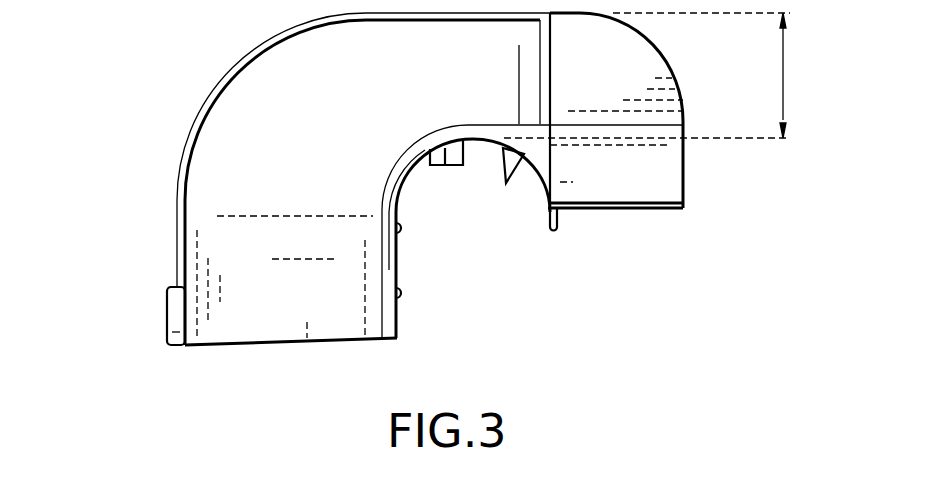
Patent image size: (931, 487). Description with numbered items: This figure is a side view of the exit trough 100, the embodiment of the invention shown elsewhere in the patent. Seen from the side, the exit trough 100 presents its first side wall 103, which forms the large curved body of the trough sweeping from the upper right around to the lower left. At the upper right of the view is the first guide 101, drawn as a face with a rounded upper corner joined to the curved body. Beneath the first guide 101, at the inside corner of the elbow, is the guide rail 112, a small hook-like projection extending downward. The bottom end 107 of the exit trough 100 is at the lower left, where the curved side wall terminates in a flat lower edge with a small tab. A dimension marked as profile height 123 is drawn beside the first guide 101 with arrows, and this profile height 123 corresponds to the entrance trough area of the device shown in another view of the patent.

The exit trough 100 is at (186, 50).
The first guide 101 is at (616, 173).
The first side wall 103 is at (344, 124).
The bottom end 107 is at (265, 350).
The guide rail 112 is at (548, 215).
The profile height 123 is at (655, 75).